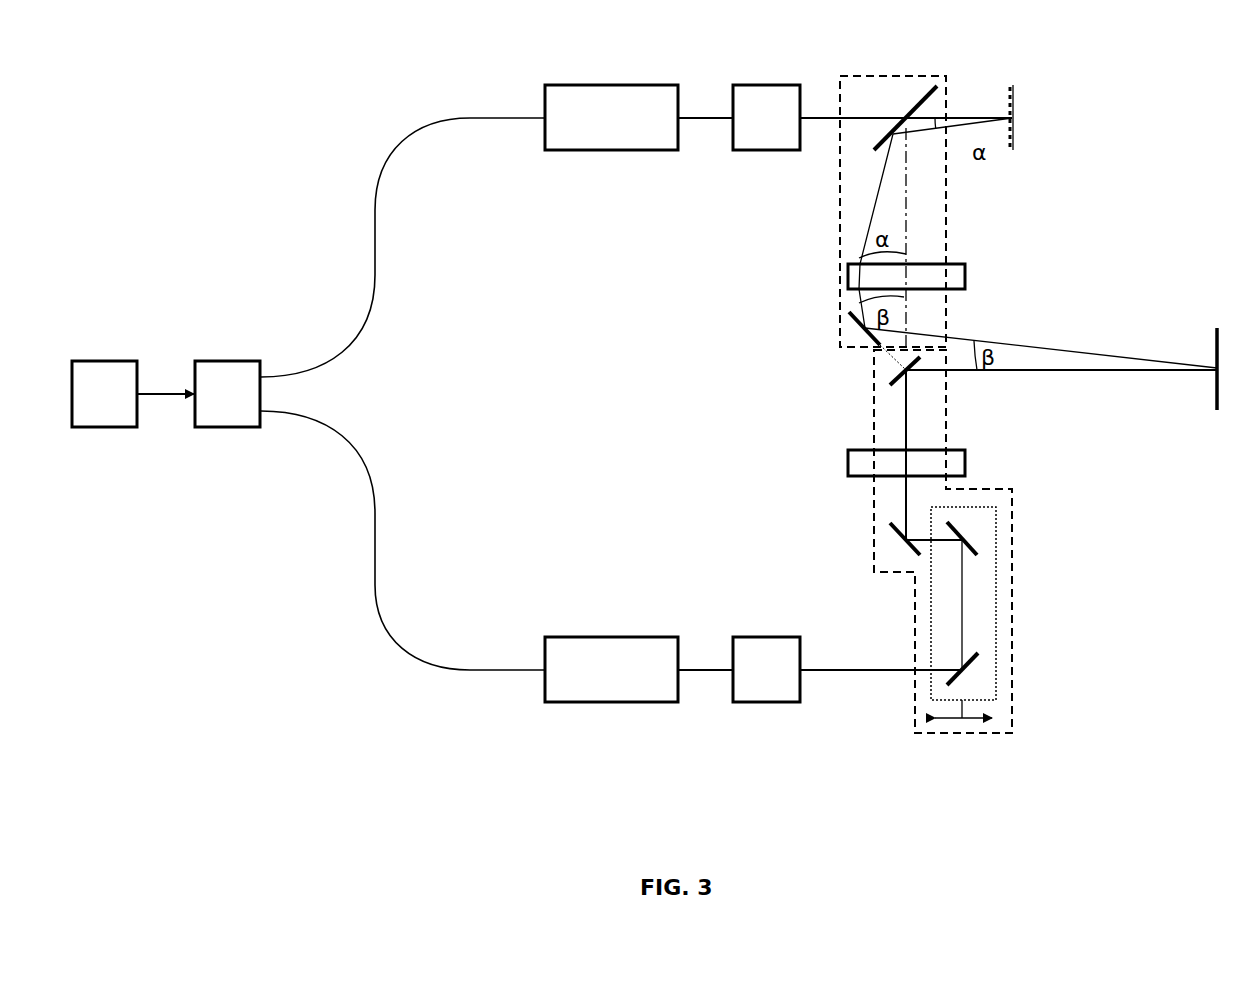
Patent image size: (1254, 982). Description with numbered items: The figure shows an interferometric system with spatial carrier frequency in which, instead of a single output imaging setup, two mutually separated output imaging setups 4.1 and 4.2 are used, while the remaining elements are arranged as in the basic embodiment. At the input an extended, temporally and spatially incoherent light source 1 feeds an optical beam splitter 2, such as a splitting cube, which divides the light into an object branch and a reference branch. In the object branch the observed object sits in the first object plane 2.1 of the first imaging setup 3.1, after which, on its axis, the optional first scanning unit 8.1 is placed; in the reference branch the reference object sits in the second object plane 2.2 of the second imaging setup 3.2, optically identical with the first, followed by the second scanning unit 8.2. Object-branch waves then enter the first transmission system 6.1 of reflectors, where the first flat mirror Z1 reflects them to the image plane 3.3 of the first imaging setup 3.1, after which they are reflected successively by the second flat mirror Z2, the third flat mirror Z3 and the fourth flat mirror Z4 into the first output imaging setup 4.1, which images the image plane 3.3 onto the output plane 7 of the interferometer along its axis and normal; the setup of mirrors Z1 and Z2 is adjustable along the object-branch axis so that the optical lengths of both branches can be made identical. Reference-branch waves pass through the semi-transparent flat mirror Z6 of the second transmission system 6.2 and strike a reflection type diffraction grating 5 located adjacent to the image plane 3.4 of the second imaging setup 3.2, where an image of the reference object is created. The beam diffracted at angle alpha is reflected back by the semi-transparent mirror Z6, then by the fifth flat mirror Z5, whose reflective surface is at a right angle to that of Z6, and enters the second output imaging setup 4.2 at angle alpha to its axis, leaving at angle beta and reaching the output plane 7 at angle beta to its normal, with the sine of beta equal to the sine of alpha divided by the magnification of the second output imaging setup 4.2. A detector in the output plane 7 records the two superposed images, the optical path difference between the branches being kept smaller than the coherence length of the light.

The light source 1 is at (97, 358).
The optical beam splitter 2 is at (221, 358).
The first object plane 2.1 is at (497, 645).
The second object plane 2.2 is at (497, 140).
The first imaging setup 3.1 is at (605, 703).
The second imaging setup 3.2 is at (605, 85).
The image plane of the first imaging setup 3.3 is at (940, 613).
The image plane of the second imaging setup 3.4 is at (1012, 85).
The first output imaging setup 4.1 is at (965, 458).
The second output imaging setup 4.2 is at (965, 287).
The diffraction grating 5 is at (1014, 110).
The first transmission system of reflectors 6.1 is at (1013, 515).
The second transmission system of reflectors 6.2 is at (946, 205).
The output plane 7 is at (1217, 325).
The first scanning unit 8.1 is at (760, 703).
The second scanning unit 8.2 is at (762, 85).
The first flat mirror Z1 is at (980, 663).
The second flat mirror Z2 is at (978, 550).
The third flat mirror Z3 is at (893, 534).
The fourth flat mirror Z4 is at (889, 378).
The fifth flat mirror Z5 is at (849, 318).
The semi-transparent flat mirror Z6 is at (920, 95).